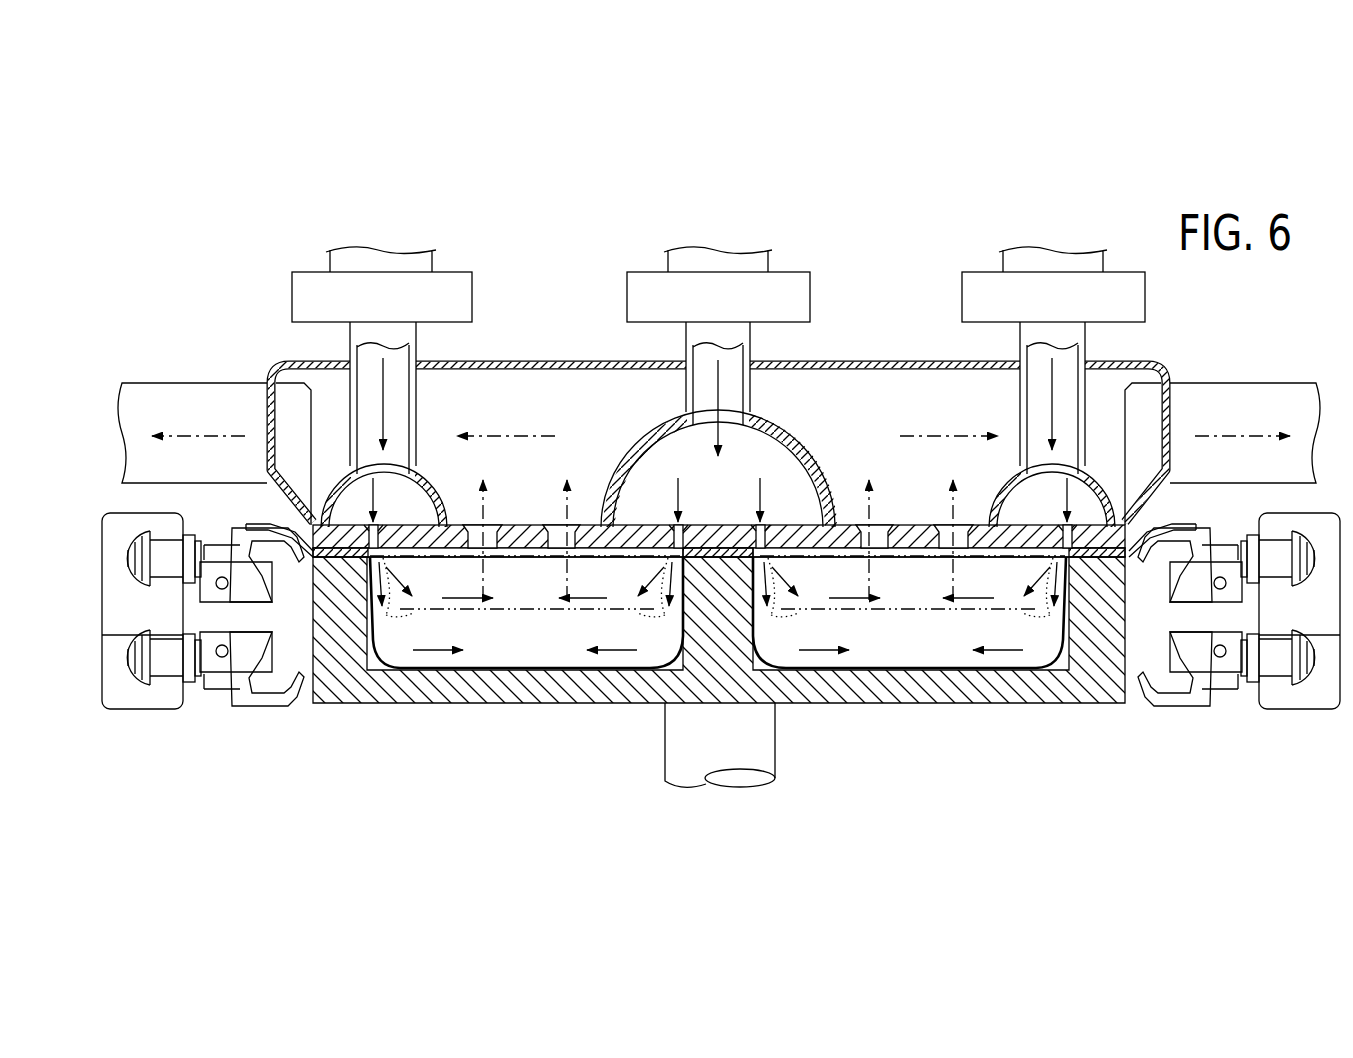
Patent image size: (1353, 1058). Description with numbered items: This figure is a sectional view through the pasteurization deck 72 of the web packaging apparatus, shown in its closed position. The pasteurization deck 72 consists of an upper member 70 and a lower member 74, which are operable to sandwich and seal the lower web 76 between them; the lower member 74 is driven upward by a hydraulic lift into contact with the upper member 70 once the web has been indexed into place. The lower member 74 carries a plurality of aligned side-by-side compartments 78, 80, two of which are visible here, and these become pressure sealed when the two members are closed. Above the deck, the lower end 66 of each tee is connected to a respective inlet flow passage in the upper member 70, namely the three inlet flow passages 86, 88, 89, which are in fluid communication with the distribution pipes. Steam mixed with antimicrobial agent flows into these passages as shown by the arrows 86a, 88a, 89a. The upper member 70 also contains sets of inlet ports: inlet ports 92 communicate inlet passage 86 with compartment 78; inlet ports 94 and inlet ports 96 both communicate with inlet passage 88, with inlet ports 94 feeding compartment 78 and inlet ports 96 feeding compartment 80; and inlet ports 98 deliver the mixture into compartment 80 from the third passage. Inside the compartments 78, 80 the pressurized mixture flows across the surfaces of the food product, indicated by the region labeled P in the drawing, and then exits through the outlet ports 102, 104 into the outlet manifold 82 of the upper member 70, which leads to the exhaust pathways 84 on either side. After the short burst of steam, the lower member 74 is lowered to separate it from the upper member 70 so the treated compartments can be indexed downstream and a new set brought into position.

The lower end of tee 66 is at (262, 305).
The upper member 70 is at (1142, 361).
The pasteurization deck 72 is at (1242, 346).
The lower member 74 is at (1112, 704).
The lower web 76 is at (368, 670).
The compartment 78 is at (668, 667).
The compartment 80 is at (1063, 662).
The outlet manifold 82 is at (888, 388).
The exhaust pathway 84 is at (168, 398).
The inlet flow passage 86 is at (414, 476).
The arrow 86a is at (383, 398).
The inlet flow passage 88 is at (748, 414).
The arrow 88a is at (692, 412).
The inlet flow passage 89 is at (1018, 471).
The arrow 89a is at (1022, 399).
The inlet port 92 is at (380, 521).
The inlet port 94 is at (690, 521).
The inlet port 96 is at (772, 521).
The inlet port 98 is at (1064, 523).
The outlet port 102 is at (560, 521).
The outlet port 104 is at (955, 522).
The fluid region P is at (538, 654).